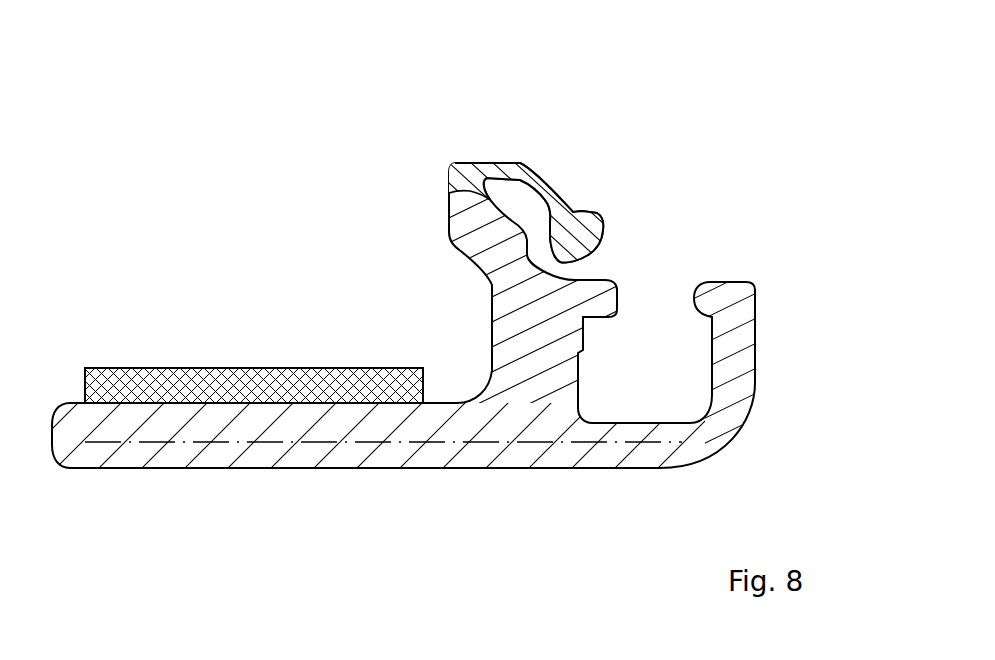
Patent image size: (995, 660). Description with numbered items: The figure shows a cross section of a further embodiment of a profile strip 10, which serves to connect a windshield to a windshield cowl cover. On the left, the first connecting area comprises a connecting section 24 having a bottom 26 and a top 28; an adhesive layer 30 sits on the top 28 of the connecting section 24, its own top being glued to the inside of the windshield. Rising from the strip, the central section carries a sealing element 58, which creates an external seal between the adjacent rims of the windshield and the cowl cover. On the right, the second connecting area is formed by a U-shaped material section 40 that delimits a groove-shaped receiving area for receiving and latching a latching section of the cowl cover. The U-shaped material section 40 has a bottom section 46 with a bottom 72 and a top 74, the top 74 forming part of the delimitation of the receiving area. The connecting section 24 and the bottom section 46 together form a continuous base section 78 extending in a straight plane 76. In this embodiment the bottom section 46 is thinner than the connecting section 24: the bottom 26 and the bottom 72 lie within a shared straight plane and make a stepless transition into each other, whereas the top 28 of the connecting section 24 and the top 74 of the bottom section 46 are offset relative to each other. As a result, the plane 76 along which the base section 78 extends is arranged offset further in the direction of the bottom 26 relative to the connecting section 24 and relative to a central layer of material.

The profile strip 10 is at (655, 110).
The connecting section 24 is at (220, 455).
The bottom 26 is at (123, 475).
The top 28 is at (122, 390).
The adhesive layer 30 is at (262, 385).
The U-shaped material section 40 is at (770, 419).
The bottom section 46 is at (634, 458).
The sealing element 58 is at (484, 166).
The bottom 72 is at (655, 476).
The top 74 is at (622, 410).
The straight plane 76 is at (318, 447).
The continuous base section 78 is at (618, 563).